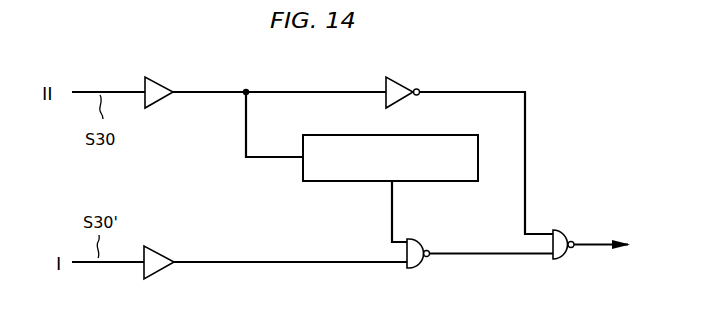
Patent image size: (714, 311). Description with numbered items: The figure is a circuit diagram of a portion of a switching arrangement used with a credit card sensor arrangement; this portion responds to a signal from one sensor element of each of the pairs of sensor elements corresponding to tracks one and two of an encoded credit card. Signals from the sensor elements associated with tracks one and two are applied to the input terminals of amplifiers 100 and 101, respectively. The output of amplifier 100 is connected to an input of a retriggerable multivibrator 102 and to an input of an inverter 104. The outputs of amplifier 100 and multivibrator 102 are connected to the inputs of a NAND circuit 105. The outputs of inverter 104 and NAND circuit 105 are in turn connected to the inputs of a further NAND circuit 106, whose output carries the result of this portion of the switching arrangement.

The amplifier 100 is at (164, 252).
The amplifier 101 is at (165, 83).
The retriggerable multivibrator 102 is at (326, 182).
The inverter 104 is at (408, 84).
The NAND circuit 105 is at (424, 242).
The NAND circuit 106 is at (568, 232).